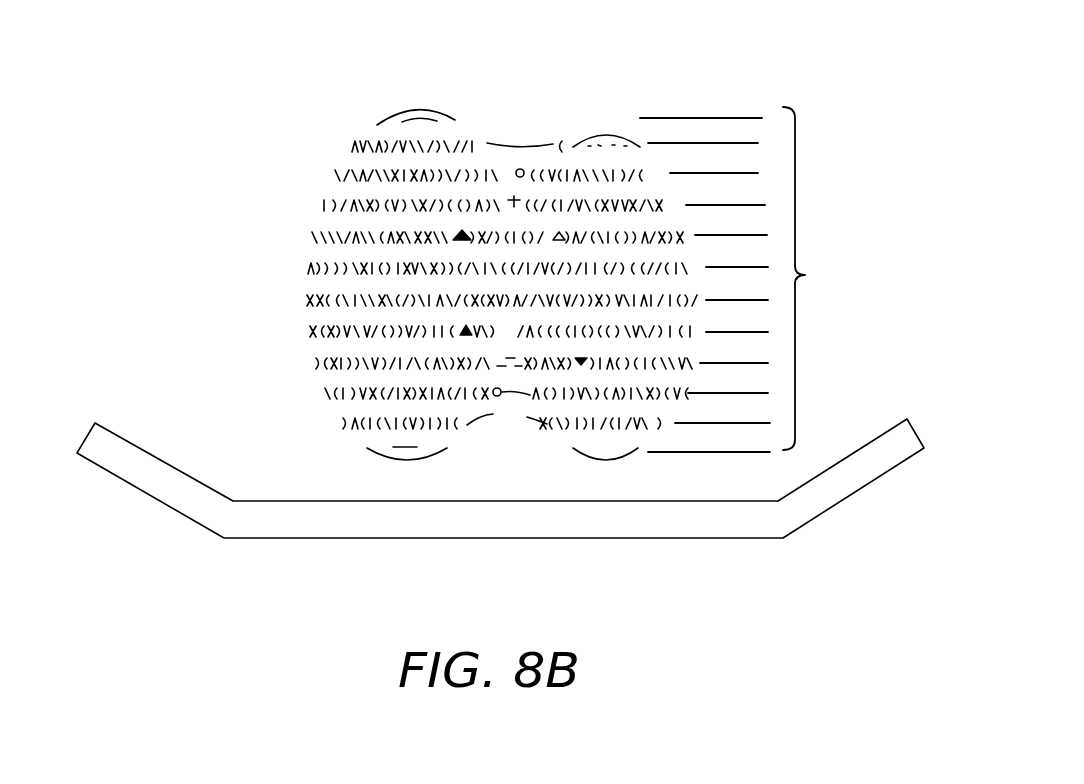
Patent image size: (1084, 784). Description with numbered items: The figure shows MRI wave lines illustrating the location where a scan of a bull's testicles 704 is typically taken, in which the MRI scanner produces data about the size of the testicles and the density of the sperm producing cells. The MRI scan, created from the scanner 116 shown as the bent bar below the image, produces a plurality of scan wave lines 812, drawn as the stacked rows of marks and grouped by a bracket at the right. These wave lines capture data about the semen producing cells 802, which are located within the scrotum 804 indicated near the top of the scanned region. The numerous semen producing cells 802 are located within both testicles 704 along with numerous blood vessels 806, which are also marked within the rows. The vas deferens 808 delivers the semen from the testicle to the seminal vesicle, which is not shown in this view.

The scanner 116 is at (517, 523).
The testicles 704 is at (310, 273).
The semen producing cells 802 is at (360, 233).
The scrotum 804 is at (360, 145).
The blood vessels 806 is at (462, 236).
The vas deferens 808 is at (513, 200).
The scan wave lines 812 is at (586, 283).